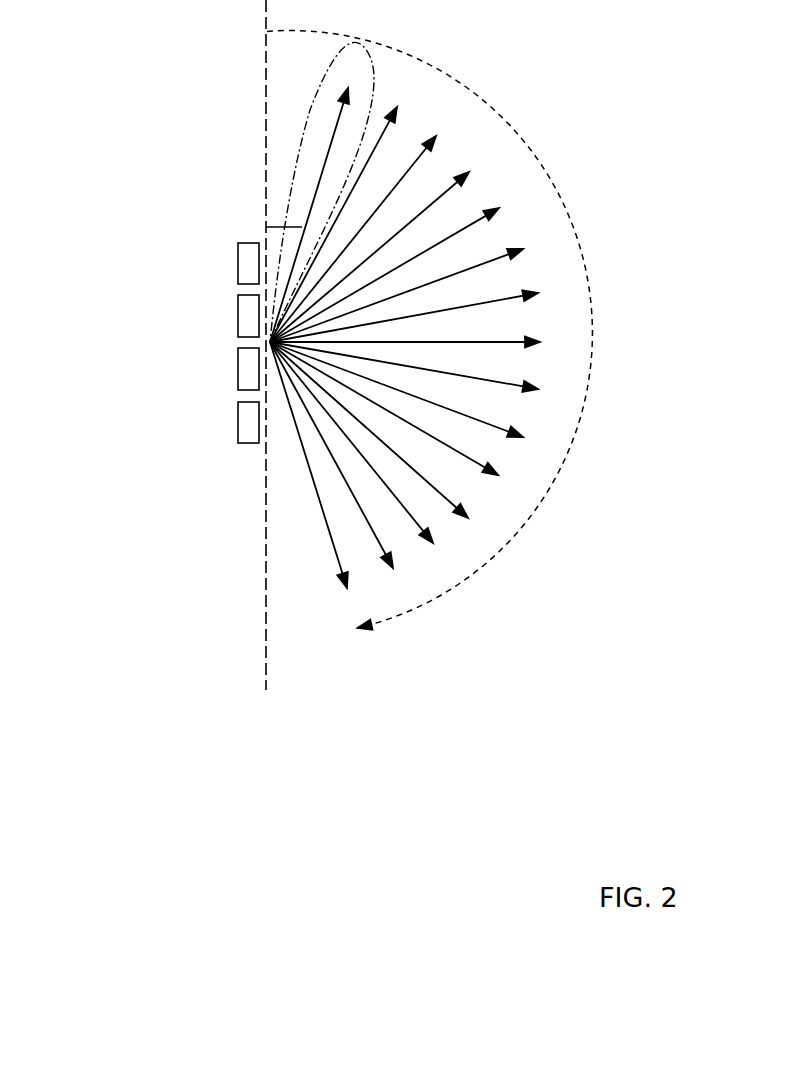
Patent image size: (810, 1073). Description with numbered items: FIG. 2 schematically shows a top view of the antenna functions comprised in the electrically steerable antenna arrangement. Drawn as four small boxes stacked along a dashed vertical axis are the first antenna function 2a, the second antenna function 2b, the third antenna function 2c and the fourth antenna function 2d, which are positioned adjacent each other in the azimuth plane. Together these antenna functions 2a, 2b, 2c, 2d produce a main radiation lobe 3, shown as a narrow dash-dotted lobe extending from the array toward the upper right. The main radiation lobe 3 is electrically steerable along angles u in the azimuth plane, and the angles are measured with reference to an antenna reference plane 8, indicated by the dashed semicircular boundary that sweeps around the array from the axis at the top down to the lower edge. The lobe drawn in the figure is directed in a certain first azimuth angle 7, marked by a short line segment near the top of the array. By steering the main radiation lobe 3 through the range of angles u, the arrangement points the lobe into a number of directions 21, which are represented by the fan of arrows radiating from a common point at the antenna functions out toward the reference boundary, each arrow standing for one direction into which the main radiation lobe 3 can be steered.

The antenna reference plane 8 is at (266, 54).
The main radiation lobe 3 is at (310, 101).
The first azimuth angle 7 is at (284, 227).
The first antenna function 2a is at (251, 263).
The second antenna function 2b is at (251, 318).
The third antenna function 2c is at (251, 372).
The fourth antenna function 2d is at (251, 427).
The directions 21 is at (289, 512).
The angles u is at (580, 247).